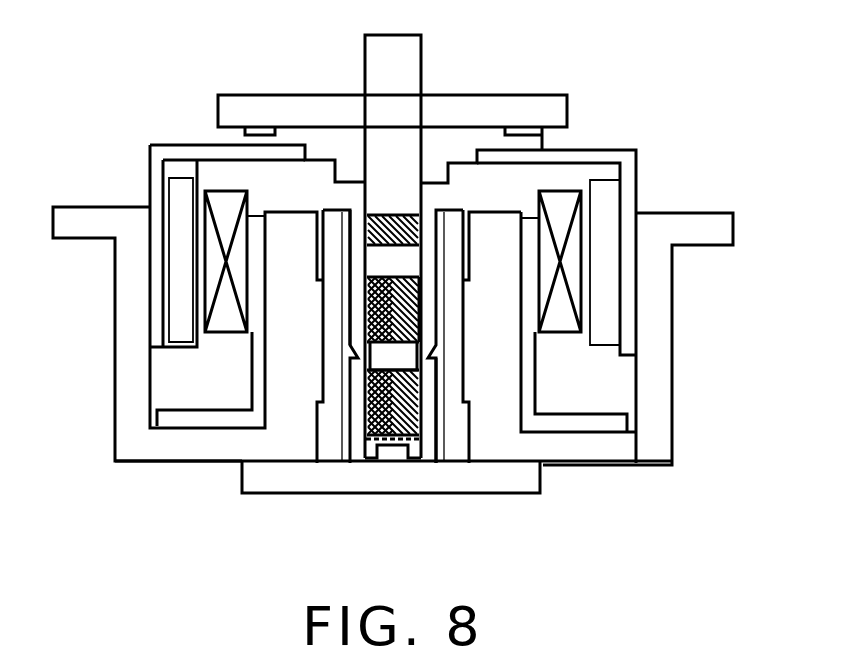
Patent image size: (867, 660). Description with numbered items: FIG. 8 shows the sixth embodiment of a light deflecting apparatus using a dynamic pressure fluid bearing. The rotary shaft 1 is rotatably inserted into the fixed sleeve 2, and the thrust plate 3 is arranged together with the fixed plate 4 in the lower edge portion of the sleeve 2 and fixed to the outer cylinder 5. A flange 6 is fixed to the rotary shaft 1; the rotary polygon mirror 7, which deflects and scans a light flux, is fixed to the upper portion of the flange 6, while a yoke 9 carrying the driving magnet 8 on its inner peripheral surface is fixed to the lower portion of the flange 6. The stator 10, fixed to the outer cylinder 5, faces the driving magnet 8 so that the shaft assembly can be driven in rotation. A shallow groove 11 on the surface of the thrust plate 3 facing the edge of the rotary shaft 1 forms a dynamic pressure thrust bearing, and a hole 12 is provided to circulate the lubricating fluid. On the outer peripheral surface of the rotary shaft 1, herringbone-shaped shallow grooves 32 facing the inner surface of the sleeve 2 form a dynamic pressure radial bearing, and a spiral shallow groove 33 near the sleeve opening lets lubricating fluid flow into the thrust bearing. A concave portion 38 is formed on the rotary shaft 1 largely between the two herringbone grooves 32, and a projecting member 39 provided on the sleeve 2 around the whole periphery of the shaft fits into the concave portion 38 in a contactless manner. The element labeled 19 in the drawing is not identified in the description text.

The rotary shaft 1 is at (412, 82).
The fixed sleeve 2 is at (333, 452).
The thrust plate 3 is at (420, 457).
The fixed plate 4 is at (413, 480).
The outer cylinder 5 is at (217, 443).
The flange 6 is at (445, 143).
The rotary polygon mirror 7 is at (550, 108).
The driving magnet 8 is at (605, 190).
The yoke 9 is at (628, 200).
The stator 10 is at (565, 312).
The shallow groove 11 is at (373, 440).
The hole 12 is at (423, 417).
The spacer 19 is at (435, 353).
The herringbone-shaped shallow groove 32 is at (425, 320).
The spiral shallow groove 33 is at (390, 213).
The concave portion 38 is at (405, 308).
The projecting member 39 is at (345, 335).